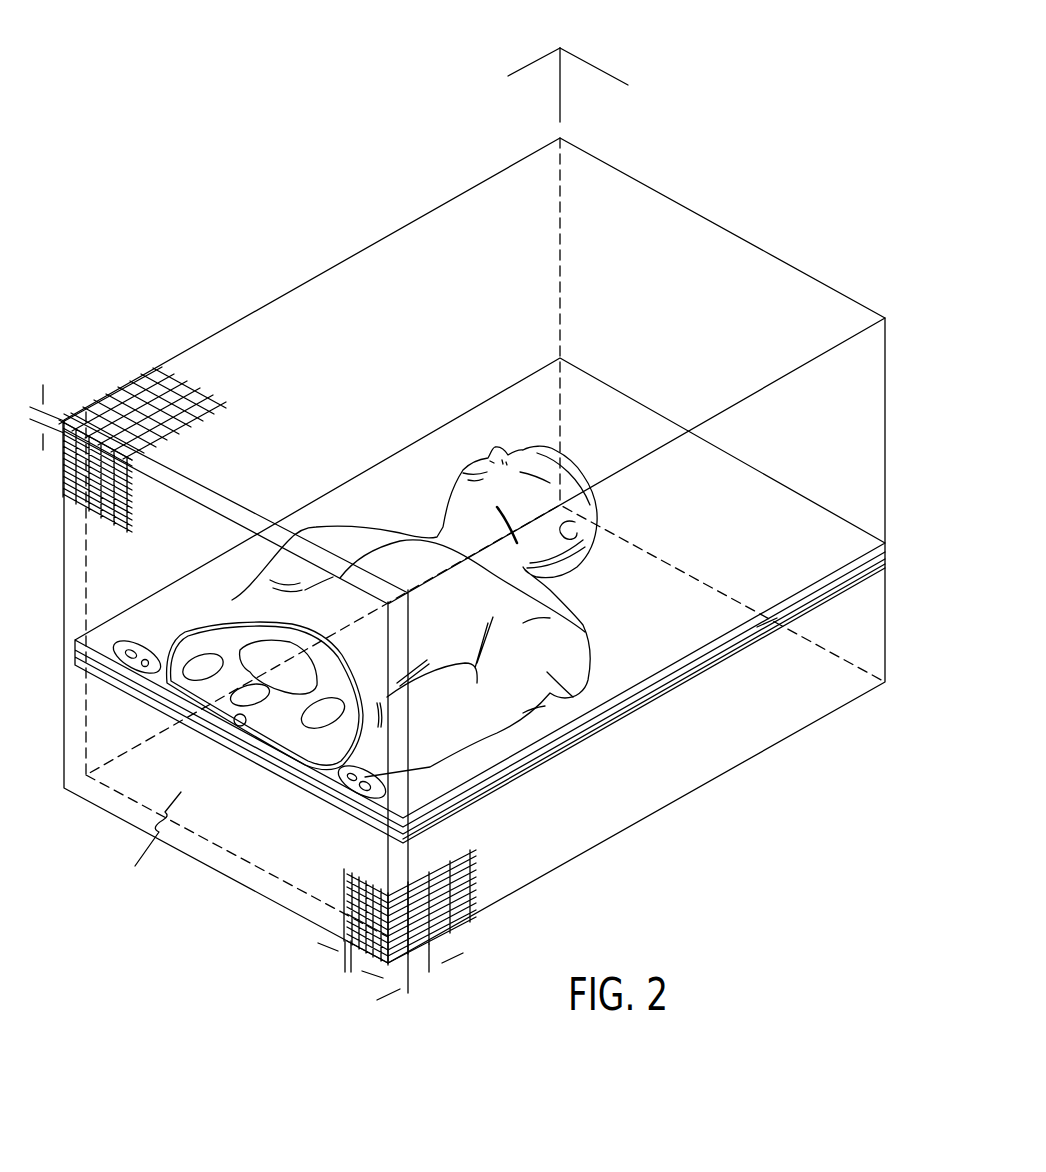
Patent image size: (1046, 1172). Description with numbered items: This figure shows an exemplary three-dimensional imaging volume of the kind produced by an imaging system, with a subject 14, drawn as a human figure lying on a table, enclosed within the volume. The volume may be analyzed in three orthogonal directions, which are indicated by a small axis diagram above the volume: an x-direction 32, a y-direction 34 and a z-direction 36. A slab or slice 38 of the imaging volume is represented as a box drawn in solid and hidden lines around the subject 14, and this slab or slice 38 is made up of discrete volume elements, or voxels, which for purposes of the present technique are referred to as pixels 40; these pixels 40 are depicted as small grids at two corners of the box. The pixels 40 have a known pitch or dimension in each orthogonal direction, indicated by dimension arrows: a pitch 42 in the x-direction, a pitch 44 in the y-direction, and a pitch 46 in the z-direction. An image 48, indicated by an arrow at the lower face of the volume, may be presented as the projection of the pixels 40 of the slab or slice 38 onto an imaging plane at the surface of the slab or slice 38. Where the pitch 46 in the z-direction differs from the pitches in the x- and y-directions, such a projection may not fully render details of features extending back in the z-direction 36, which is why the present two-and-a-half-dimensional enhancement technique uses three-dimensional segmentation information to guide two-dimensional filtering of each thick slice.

The subject 14 is at (593, 680).
The x-direction 32 is at (600, 62).
The y-direction 34 is at (557, 88).
The z-direction 36 is at (527, 62).
The slab or slice 38 is at (77, 733).
The pixels 40 is at (95, 494).
The pitch in the x-direction 42 is at (331, 952).
The pitch in the y-direction 44 is at (46, 436).
The pitch in the z-direction 46 is at (438, 963).
The image 48 is at (145, 847).